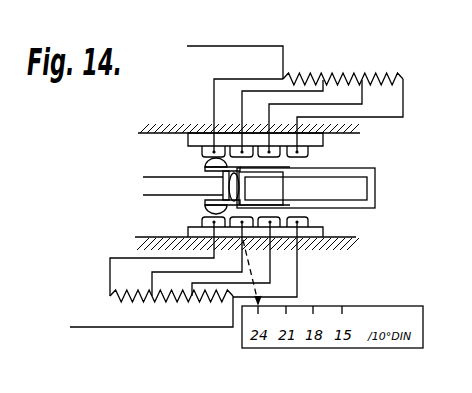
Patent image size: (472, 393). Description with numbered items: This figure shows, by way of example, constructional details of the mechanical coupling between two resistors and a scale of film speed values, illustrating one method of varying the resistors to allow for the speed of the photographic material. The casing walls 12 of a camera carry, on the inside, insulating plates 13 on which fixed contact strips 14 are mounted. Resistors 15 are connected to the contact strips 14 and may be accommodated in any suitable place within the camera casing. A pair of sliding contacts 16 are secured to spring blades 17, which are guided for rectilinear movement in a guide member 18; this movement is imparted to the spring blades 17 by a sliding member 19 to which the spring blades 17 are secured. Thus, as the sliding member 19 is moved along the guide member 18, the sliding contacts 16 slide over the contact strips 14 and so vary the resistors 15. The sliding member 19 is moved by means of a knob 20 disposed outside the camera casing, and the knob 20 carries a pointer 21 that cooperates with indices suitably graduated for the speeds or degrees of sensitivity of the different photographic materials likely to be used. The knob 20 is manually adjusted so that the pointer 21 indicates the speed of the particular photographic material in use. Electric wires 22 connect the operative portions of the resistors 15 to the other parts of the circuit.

The casing walls 12 is at (340, 252).
The insulating plates 13 is at (190, 140).
The fixed contact strips 14 is at (308, 152).
The resistors 15 is at (360, 80).
The sliding contacts 16 is at (203, 164).
The spring blades 17 is at (226, 198).
The guide member 18 is at (375, 171).
The sliding member 19 is at (270, 190).
The knob 20 is at (360, 208).
The pointer 21 is at (262, 264).
The electric wires 22 is at (238, 46).